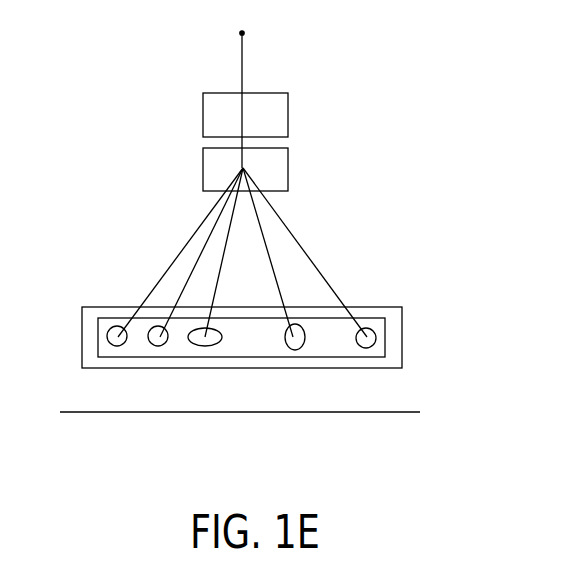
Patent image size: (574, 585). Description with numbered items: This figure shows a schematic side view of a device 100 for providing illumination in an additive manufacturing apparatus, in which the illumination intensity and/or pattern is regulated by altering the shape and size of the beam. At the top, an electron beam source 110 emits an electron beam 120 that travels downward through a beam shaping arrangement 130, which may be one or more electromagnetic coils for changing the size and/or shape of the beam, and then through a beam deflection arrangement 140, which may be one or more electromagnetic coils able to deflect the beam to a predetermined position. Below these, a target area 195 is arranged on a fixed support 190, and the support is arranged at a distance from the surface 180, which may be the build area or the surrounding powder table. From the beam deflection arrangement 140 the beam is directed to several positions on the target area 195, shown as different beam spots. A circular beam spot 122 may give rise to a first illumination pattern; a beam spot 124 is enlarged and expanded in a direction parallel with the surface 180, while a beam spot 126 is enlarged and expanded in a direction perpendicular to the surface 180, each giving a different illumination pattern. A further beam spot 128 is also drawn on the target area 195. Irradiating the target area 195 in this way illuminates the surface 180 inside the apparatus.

The device 100 is at (428, 113).
The electron beam source 110 is at (245, 33).
The electron beam 120 is at (276, 61).
The beam shaping arrangement 130 is at (272, 115).
The beam deflection arrangement 140 is at (275, 175).
The circular beam spot 122 is at (158, 341).
The beam spot 124 is at (207, 345).
The beam spot 126 is at (297, 347).
The fourth beam spot 128 is at (383, 324).
The fixed support 190 is at (402, 340).
The target area 195 is at (90, 328).
The surface 180 is at (138, 424).